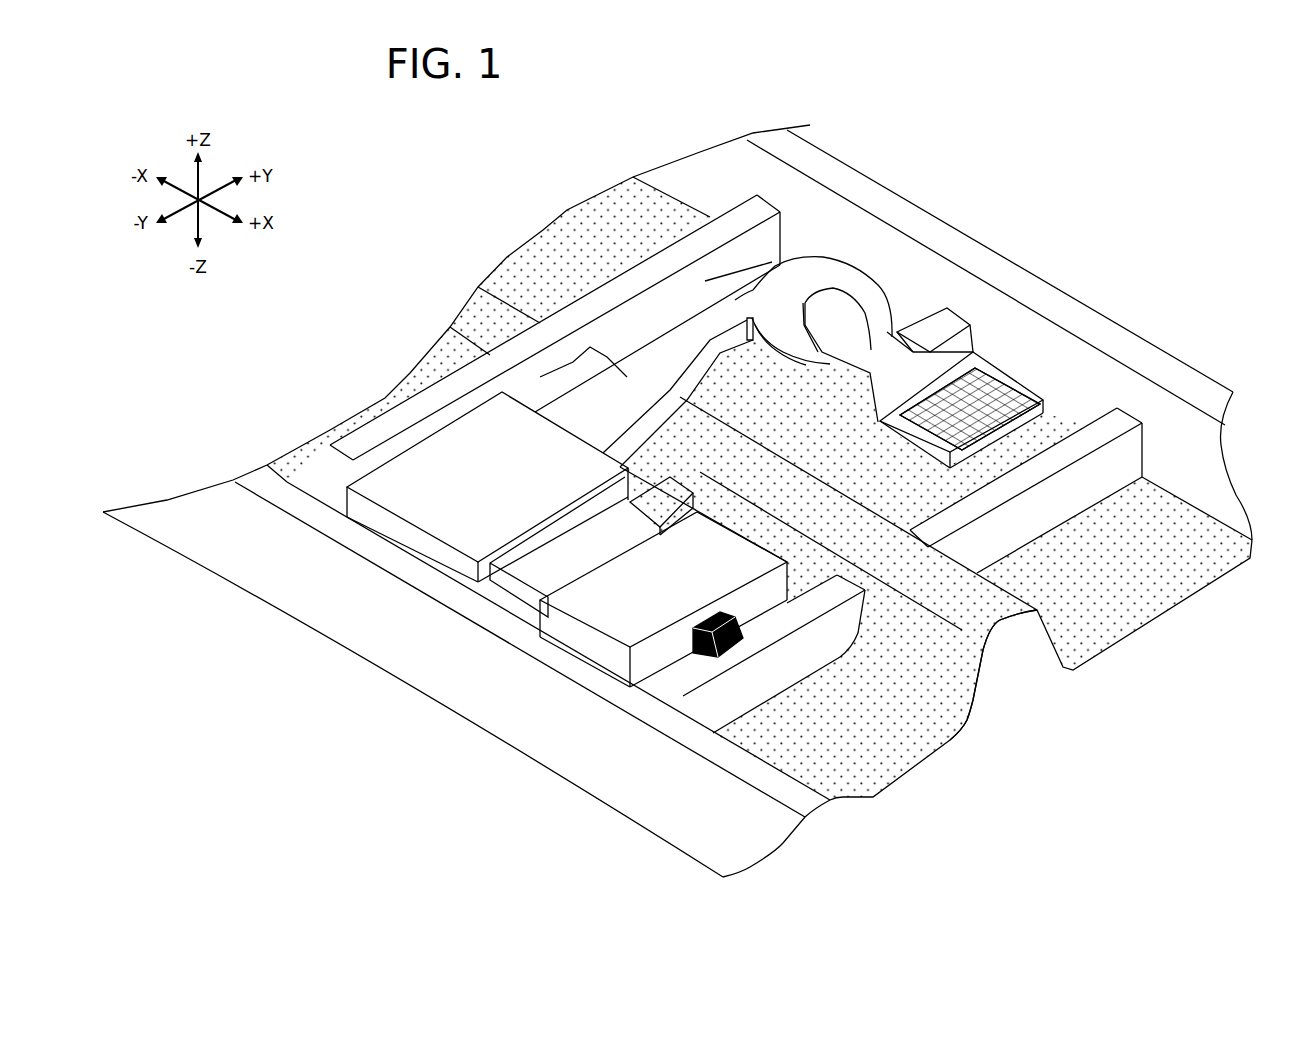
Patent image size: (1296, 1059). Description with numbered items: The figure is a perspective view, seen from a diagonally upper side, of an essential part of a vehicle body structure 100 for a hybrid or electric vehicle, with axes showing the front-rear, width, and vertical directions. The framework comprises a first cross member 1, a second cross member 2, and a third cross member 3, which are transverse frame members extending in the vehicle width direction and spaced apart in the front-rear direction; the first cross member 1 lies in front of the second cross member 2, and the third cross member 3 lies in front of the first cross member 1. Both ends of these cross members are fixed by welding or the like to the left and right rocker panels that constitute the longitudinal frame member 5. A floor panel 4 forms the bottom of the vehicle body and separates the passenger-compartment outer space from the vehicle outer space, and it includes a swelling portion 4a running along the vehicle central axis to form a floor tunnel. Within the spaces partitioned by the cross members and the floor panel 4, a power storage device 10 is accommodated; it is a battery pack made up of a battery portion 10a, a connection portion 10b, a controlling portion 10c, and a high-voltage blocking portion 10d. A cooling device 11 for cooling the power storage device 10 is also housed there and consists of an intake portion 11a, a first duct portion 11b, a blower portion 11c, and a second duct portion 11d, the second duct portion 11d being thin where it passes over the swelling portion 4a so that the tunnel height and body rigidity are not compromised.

The vehicle body structure 100 is at (1197, 160).
The first cross member 1 is at (647, 503).
The second cross member 2 is at (417, 410).
The third cross member 3 is at (940, 513).
The floor panel 4 is at (847, 738).
The swelling portion 4a is at (950, 657).
The longitudinal frame member 5 is at (600, 810).
The power storage device 10 is at (482, 606).
The battery portion 10a is at (457, 497).
The connection portion 10b is at (543, 553).
The controlling portion 10c is at (617, 610).
The high-voltage blocking portion 10d is at (693, 633).
The cooling device 11 is at (858, 283).
The intake portion 11a is at (1007, 385).
The first duct portion 11b is at (872, 345).
The blower portion 11c is at (837, 273).
The second duct portion 11d is at (633, 367).